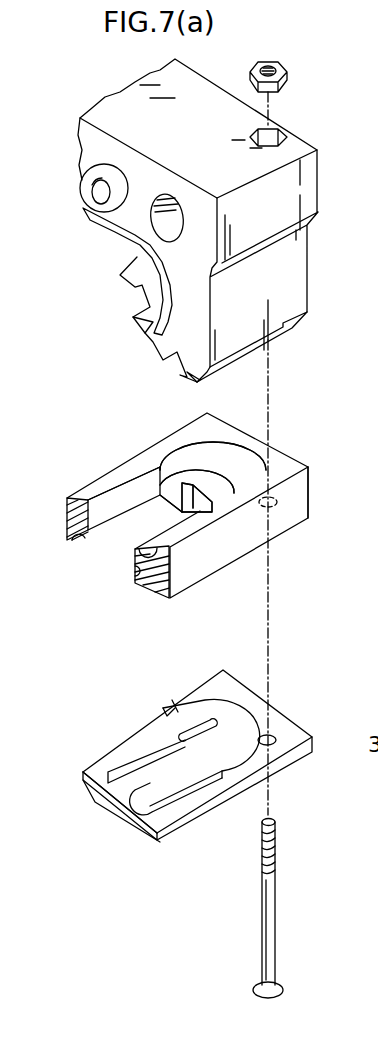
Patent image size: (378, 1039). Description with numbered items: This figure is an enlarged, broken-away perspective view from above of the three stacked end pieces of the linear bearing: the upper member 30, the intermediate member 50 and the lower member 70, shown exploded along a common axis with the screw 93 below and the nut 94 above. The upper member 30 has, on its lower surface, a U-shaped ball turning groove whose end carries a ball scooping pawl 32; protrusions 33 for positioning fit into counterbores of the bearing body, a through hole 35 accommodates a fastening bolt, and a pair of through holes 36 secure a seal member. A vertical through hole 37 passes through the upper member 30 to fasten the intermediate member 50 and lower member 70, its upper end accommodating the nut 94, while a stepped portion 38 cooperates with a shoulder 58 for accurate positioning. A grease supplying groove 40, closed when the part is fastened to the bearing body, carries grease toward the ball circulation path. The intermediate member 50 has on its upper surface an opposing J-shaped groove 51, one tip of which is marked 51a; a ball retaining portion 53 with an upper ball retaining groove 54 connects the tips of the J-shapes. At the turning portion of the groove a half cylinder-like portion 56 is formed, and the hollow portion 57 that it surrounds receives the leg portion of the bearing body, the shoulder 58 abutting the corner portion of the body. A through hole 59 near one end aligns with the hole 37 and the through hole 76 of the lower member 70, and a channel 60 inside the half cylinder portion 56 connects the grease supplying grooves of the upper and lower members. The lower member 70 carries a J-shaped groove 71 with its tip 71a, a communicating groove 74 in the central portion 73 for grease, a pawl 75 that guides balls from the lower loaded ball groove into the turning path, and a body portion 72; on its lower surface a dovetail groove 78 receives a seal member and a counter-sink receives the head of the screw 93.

The upper member 30 is at (290, 118).
The ball scooping pawl 32 is at (118, 277).
The protrusion 33 is at (92, 216).
The through hole 35 is at (83, 198).
The through hole 36 is at (145, 242).
The vertical through hole 37 is at (288, 137).
The stepped portion 38 is at (180, 372).
The grease supplying groove 40 is at (137, 321).
The intermediate member 50 is at (277, 430).
The J-shaped groove 51 is at (260, 464).
The tip of the J-shape 51a is at (163, 465).
The ball retaining portion 53 is at (80, 503).
The upper ball retaining groove 54 is at (132, 467).
The half cylinder-like portion 56 is at (213, 475).
The hollow portion 57 is at (157, 531).
The shoulder 58 is at (303, 467).
The through hole 59 is at (277, 502).
The channel 60 is at (186, 507).
The lower member 70 is at (263, 692).
The J-shaped groove 71 is at (237, 730).
The tip of the J-shaped groove 71a is at (185, 725).
The plate body 72 is at (105, 763).
The central portion 73 is at (148, 755).
The communicating groove 74 is at (160, 726).
The pawl 75 is at (172, 700).
The through hole 76 is at (277, 743).
The dovetail groove 78 is at (100, 800).
The screw 93 is at (275, 987).
The nut 94 is at (287, 76).